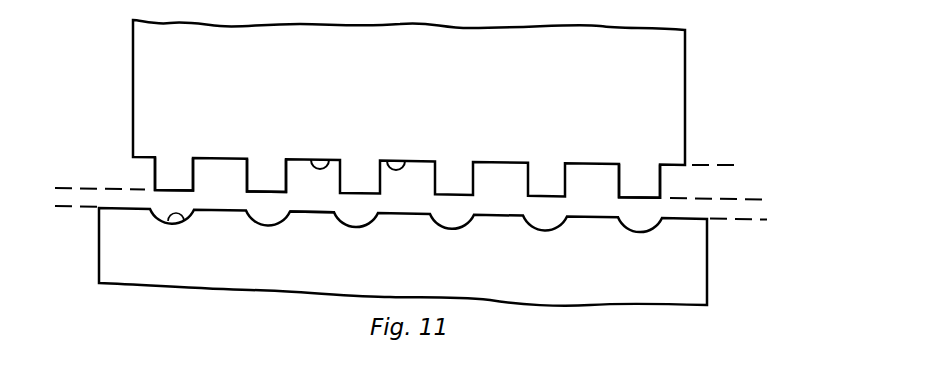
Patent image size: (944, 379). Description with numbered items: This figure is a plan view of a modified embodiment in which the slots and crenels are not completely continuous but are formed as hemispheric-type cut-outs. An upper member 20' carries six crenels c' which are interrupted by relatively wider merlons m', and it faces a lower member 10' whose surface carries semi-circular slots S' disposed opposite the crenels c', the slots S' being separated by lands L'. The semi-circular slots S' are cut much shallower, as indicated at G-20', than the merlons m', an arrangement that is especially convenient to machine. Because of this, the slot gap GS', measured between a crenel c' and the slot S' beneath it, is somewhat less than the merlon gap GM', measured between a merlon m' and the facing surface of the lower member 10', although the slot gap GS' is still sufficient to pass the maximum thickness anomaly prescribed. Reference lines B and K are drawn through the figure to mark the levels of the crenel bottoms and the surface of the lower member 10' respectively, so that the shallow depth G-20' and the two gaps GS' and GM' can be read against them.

The upper die block 20' is at (409, 109).
The lower die block 10' is at (403, 257).
The crenels c' is at (407, 152).
The merlons m' is at (358, 139).
The semi-circular slots S' is at (188, 236).
The land between grooves of lower block L' is at (312, 236).
The slot gap GS' is at (476, 229).
The merlon gap GM' is at (526, 209).
The shallow cut depth of the slots G-20' is at (747, 172).
The reference line B is at (404, 194).
The reference line K is at (405, 215).